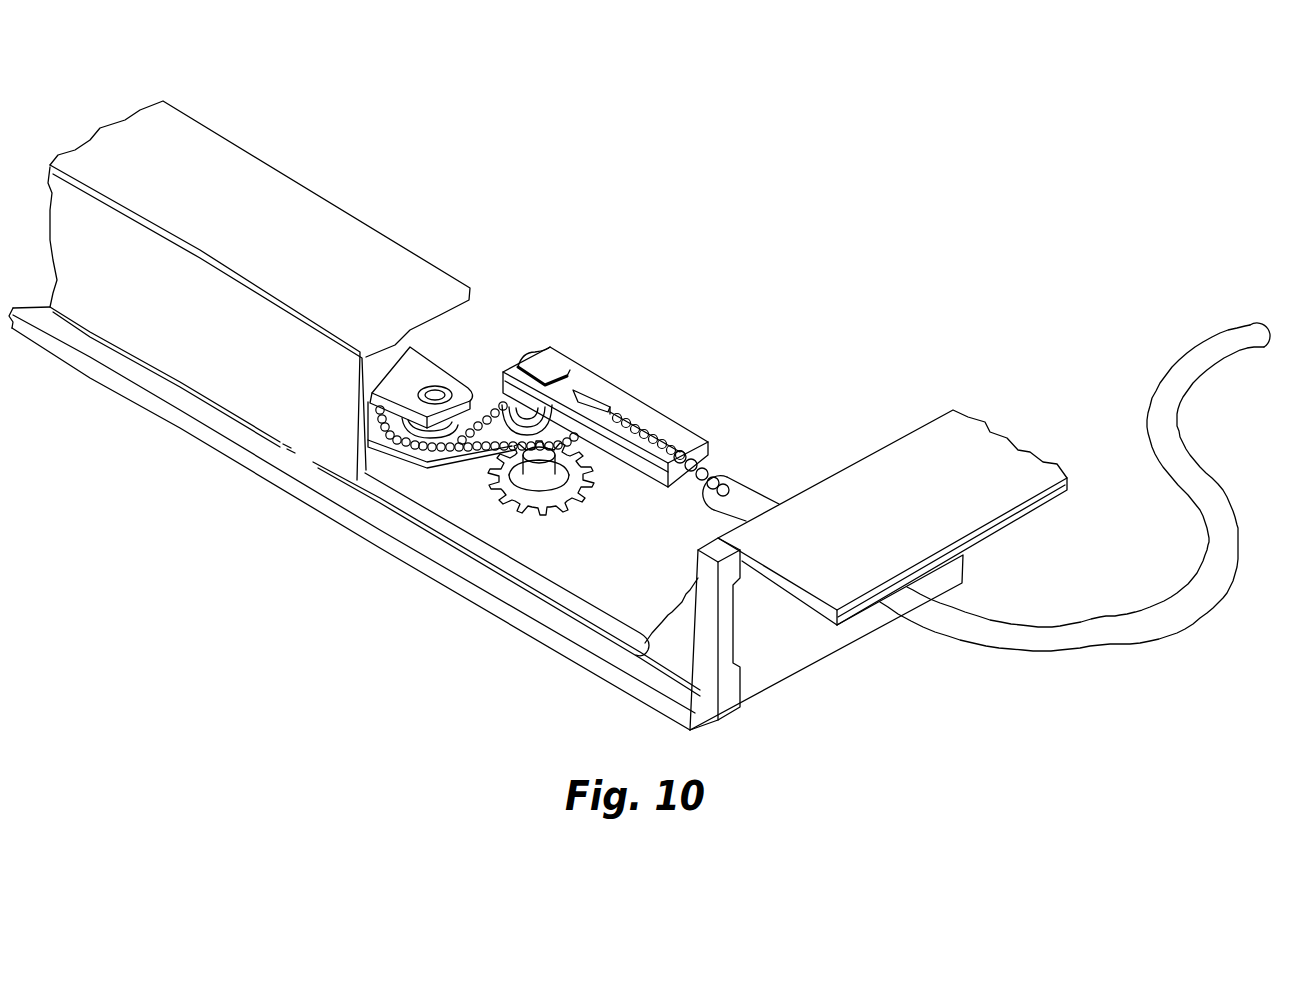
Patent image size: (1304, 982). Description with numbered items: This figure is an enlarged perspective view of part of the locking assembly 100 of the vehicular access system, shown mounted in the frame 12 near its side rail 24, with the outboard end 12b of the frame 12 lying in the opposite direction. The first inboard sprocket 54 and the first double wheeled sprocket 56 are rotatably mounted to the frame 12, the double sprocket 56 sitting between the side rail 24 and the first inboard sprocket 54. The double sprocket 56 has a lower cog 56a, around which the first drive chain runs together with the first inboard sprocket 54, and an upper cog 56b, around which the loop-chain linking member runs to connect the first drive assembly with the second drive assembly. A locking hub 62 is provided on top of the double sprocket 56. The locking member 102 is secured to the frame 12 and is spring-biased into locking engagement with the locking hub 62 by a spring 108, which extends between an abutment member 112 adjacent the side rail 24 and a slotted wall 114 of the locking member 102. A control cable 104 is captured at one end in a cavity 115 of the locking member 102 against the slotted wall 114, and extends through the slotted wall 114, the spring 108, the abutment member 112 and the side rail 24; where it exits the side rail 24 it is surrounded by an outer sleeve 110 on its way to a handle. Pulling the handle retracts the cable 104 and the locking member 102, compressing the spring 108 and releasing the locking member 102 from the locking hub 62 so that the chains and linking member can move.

The frame 12 is at (93, 382).
The outboard end 12b is at (270, 378).
The first side rail 24 is at (948, 460).
The first inboard sprocket 54 is at (472, 393).
The first double wheeled sprocket 56 is at (523, 513).
The lower cog 56a is at (530, 470).
The upper cog 56b is at (513, 441).
The locking hub 62 is at (533, 368).
The locking assembly 100 is at (1229, 487).
The locking member 102 is at (640, 487).
The control cable 104 is at (712, 463).
The spring 108 is at (663, 420).
The outer sleeve 110 is at (1055, 641).
The abutment member 112 is at (775, 493).
The slotted wall 114 is at (613, 408).
The cavity 115 is at (587, 392).